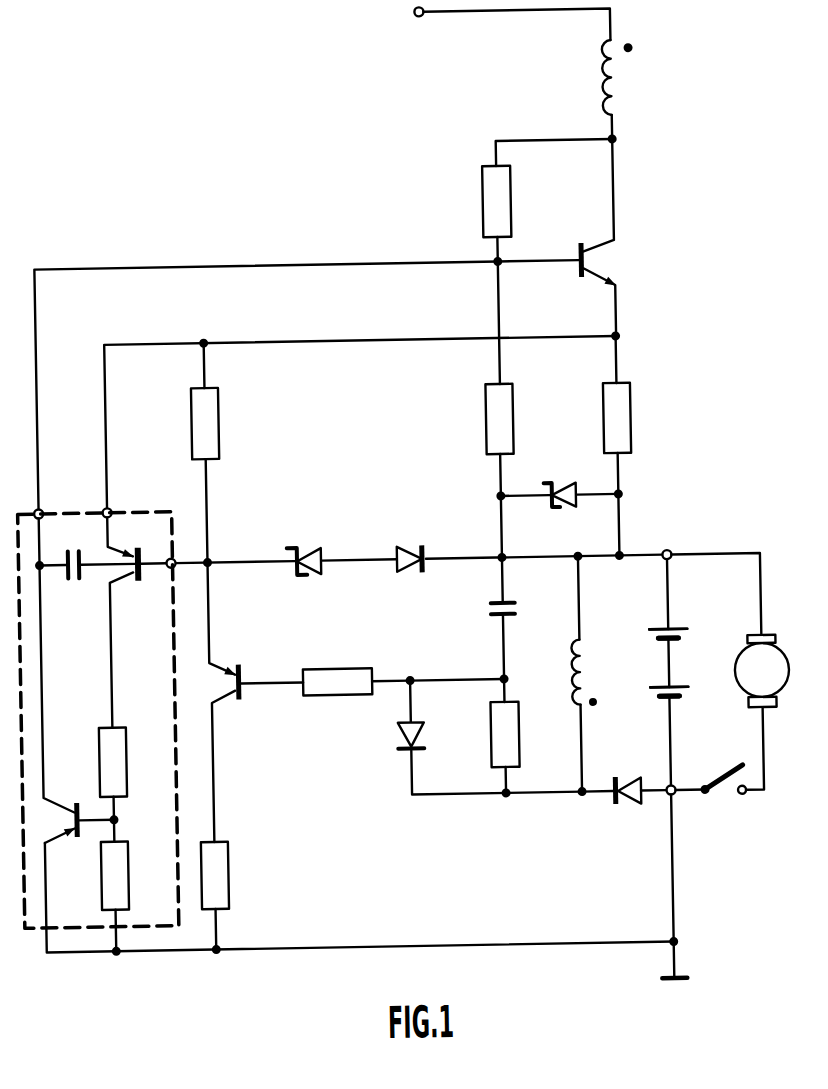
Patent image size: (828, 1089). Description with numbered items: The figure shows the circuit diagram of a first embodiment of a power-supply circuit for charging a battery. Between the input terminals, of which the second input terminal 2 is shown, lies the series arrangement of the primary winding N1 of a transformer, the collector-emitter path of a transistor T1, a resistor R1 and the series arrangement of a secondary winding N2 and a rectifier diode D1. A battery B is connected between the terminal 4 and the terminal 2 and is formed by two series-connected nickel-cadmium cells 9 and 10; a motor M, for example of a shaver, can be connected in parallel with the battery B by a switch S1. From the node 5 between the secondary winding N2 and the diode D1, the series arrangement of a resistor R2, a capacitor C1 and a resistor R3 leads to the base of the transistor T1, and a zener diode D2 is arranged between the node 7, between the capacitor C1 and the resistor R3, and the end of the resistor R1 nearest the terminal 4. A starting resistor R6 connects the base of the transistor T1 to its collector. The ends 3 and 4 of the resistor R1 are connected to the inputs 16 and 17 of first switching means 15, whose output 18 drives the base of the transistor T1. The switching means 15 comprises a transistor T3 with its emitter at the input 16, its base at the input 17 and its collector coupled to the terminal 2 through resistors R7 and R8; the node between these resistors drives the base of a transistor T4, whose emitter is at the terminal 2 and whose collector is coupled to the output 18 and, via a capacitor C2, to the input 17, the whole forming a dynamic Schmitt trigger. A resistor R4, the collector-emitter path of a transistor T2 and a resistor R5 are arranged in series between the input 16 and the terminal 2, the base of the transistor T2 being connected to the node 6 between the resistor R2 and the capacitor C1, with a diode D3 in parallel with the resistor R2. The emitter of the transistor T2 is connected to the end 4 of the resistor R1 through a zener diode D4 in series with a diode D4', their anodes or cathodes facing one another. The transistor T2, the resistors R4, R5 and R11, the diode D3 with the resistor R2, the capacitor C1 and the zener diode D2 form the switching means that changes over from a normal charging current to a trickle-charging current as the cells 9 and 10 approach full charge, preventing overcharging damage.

The primary winding N1 is at (627, 72).
The starting resistor R6 is at (518, 190).
The transistor T1 is at (584, 245).
The end of resistor R1 3 is at (624, 338).
The resistor R4 is at (222, 418).
The resistor R3 is at (517, 414).
The resistor R1 is at (634, 414).
The zener diode D2 is at (560, 482).
The node 7 is at (505, 500).
The output 18 is at (43, 502).
The input 16 is at (112, 502).
The input 17 is at (174, 552).
The capacitor C2 is at (72, 573).
The transistor T3 is at (138, 576).
The first switching means 15 is at (24, 921).
The zener diode D4 is at (299, 542).
The diode D4' is at (414, 540).
The capacitor C1 is at (517, 608).
The node 6 is at (496, 676).
The transistor T2 is at (239, 659).
The resistor R11 is at (337, 694).
The diode D3 is at (394, 735).
The resistor R2 is at (487, 737).
The secondary winding N2 is at (574, 679).
The node 5 is at (579, 798).
The rectifier diode D1 is at (630, 780).
The terminal 4 is at (666, 552).
The battery B is at (665, 662).
The nickel-cadmium cell 9 is at (687, 636).
The nickel-cadmium cell 10 is at (687, 694).
The input terminal 2 is at (671, 797).
The switch S1 is at (723, 779).
The motor M is at (747, 637).
The transistor T4 is at (72, 799).
The resistor R7 is at (95, 743).
The resistor R8 is at (94, 876).
The resistor R5 is at (225, 860).